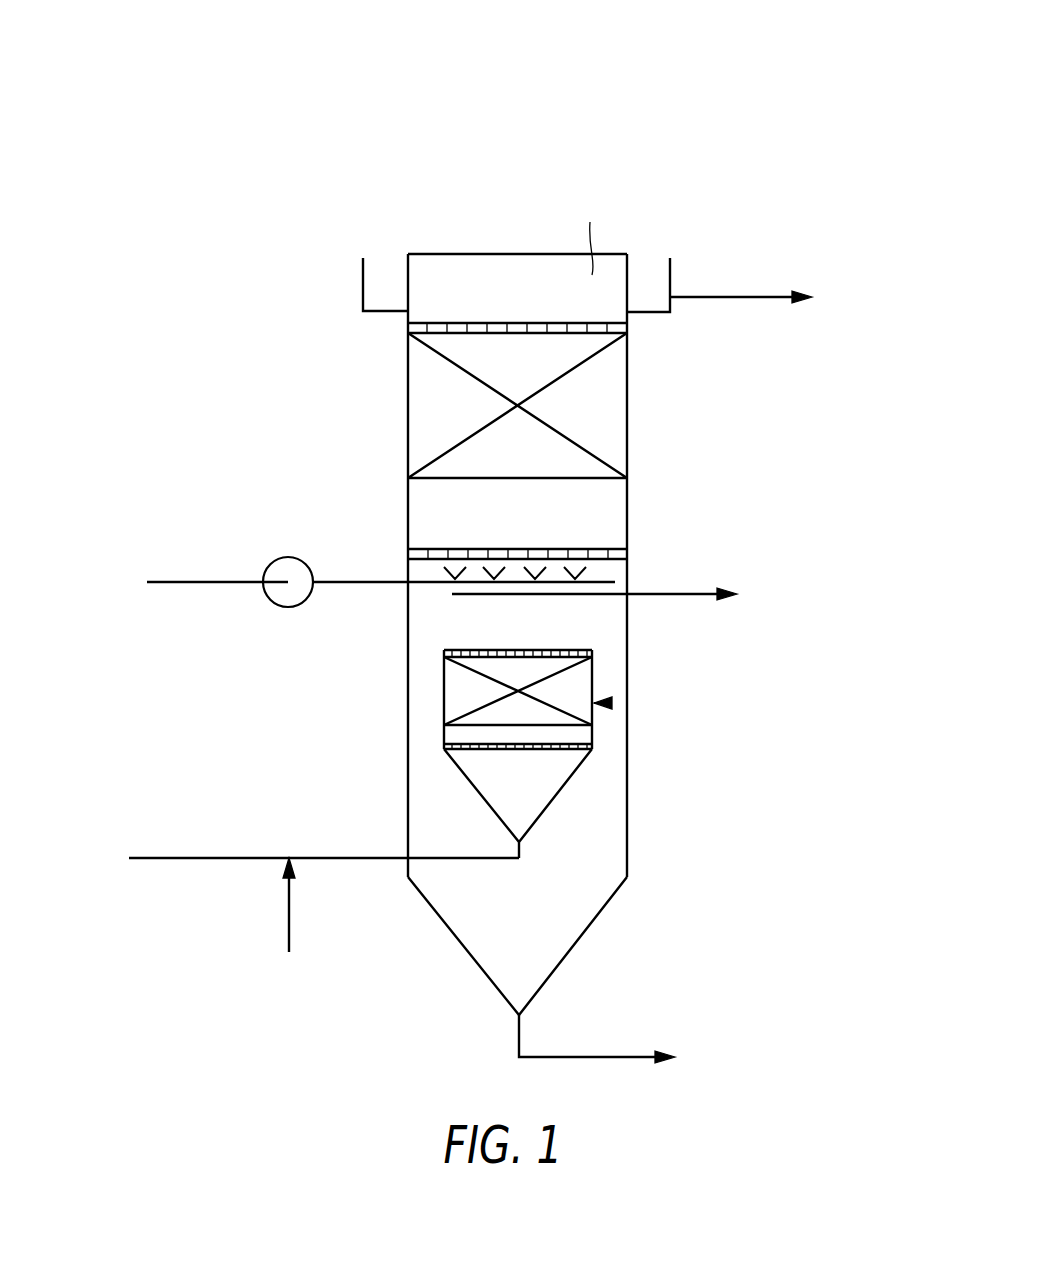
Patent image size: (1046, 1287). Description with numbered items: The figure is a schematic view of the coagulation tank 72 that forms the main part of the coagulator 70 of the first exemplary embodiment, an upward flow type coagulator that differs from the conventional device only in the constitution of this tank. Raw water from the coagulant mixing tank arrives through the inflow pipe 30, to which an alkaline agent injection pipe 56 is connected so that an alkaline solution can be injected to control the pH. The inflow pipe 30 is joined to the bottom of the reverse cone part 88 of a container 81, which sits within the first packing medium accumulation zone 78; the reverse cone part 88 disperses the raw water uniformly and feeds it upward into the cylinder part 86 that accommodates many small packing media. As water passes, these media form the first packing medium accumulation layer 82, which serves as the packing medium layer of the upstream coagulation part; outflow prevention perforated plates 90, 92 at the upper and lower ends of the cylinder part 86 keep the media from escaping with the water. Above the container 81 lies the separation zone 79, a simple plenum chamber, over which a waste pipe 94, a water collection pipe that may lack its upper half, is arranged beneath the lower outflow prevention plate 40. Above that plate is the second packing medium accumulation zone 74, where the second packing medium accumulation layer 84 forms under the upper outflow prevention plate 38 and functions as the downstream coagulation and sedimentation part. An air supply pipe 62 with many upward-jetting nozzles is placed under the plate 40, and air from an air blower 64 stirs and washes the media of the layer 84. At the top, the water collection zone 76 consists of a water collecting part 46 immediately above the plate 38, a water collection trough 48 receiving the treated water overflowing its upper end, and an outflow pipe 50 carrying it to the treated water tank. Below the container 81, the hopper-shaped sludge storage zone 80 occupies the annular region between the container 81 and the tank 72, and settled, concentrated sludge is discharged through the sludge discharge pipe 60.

The coagulator 70 is at (541, 176).
The water collection zone 76 is at (534, 302).
The water collecting part 46 is at (588, 235).
The water collection trough 48 is at (672, 280).
The outflow pipe 50 is at (750, 296).
The outflow prevention plate 38 is at (577, 335).
The second packing medium accumulation layer 84 is at (600, 408).
The coagulation tank 72 is at (628, 494).
The second packing medium accumulation zone 74 is at (534, 525).
The outflow prevention plate 40 is at (597, 547).
The air supply pipe 62 is at (354, 580).
The air blower 64 is at (290, 607).
The waste pipe 94 is at (648, 594).
The separation zone 79 is at (534, 632).
The cylinder part 86 is at (593, 667).
The outflow prevention perforated plate 90 is at (557, 650).
The first packing medium accumulation layer 82 is at (573, 690).
The container 81 is at (610, 703).
The first packing medium accumulation zone 78 is at (518, 711).
The outflow prevention perforated plate 92 is at (557, 750).
The reverse cone part 88 is at (553, 800).
The inflow pipe 30 is at (250, 858).
The alkaline agent injection pipe 56 is at (288, 917).
The sludge storage zone 80 is at (508, 928).
The sludge discharge pipe 60 is at (613, 1057).